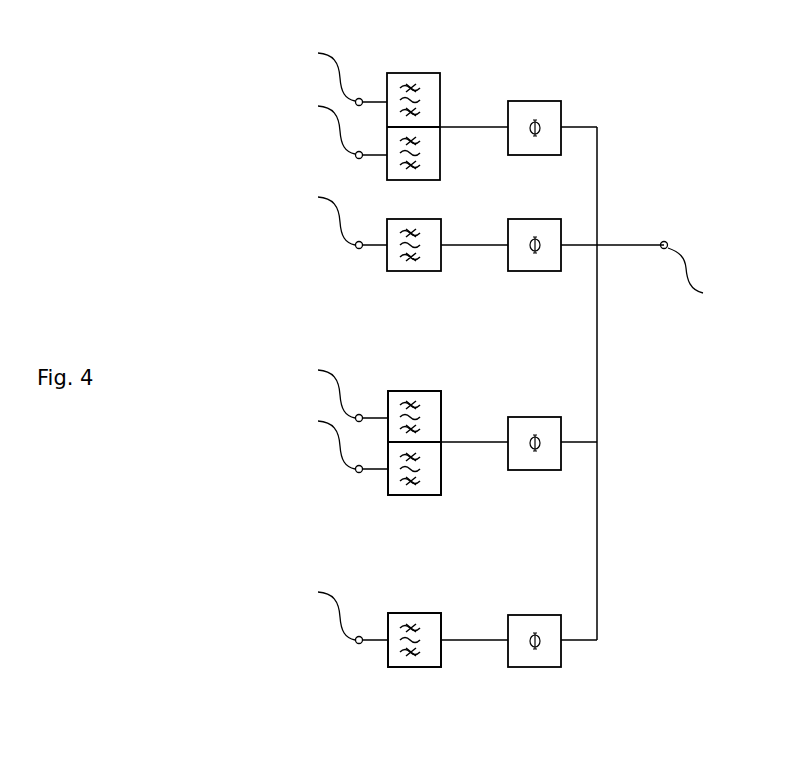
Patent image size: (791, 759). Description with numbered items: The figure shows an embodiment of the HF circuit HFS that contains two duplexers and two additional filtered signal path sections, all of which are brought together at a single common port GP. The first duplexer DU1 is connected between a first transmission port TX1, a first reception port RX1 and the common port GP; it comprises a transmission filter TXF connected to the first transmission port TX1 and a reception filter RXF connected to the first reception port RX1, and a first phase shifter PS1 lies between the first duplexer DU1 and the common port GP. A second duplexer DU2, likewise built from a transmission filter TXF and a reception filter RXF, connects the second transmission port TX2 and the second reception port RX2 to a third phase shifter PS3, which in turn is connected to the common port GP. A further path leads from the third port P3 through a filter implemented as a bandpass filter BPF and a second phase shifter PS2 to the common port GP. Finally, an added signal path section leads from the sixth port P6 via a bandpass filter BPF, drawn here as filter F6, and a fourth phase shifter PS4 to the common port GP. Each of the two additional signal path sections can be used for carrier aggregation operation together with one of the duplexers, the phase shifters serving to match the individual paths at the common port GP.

The HF circuit HFS is at (119, 174).
The first transmission port TX1 is at (317, 74).
The first reception port RX1 is at (316, 127).
The third port P3 is at (321, 218).
The second transmission port TX2 is at (317, 390).
The second reception port RX2 is at (316, 442).
The sixth port P6 is at (322, 612).
The common port GP is at (697, 283).
The first duplexer DU1 is at (457, 73).
The second duplexer DU2 is at (365, 496).
The bandpass filter BPF is at (441, 223).
The transmission filter TXF is at (397, 391).
The reception filter RXF is at (441, 468).
The filter of the sixth port F6 is at (412, 667).
The first phase shifter PS1 is at (528, 101).
The second phase shifter PS2 is at (546, 272).
The third phase shifter PS3 is at (545, 417).
The fourth phase shifter PS4 is at (541, 668).